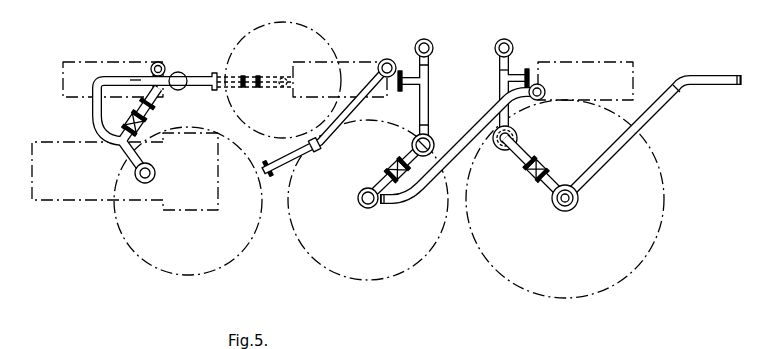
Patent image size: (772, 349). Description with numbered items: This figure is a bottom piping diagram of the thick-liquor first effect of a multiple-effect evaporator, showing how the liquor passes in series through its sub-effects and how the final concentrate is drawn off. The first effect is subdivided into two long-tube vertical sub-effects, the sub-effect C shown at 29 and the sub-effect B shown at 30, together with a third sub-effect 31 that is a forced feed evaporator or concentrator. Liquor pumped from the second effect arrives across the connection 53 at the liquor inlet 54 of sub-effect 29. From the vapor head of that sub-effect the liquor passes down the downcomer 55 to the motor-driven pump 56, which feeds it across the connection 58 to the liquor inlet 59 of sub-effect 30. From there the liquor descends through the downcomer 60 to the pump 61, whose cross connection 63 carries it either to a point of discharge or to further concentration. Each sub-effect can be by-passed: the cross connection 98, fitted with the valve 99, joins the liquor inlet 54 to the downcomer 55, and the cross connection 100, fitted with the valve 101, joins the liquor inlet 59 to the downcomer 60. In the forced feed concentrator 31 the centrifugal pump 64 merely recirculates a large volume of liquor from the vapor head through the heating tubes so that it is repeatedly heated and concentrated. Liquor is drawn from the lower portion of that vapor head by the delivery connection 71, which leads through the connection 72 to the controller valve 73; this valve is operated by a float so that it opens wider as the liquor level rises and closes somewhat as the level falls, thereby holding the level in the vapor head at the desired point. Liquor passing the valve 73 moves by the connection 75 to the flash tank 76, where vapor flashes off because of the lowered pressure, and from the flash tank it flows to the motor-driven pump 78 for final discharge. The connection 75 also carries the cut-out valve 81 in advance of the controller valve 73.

The sub-effect 1—C of the first effect 29 is at (502, 276).
The sub-effect 1—B of the first effect 30 is at (325, 267).
The forced feed evaporator (third sub-effect) 31 is at (137, 255).
The connection 53 is at (649, 121).
The liquor inlet 54 is at (579, 197).
The downcomer 55 is at (518, 134).
The pump 56 is at (572, 62).
The connection 58 is at (462, 148).
The liquor inlet 59 is at (358, 202).
The downcomer 60 is at (412, 143).
The pump 61 is at (363, 62).
The cross connection 63 is at (330, 132).
The centrifugal pump 64 is at (125, 171).
The delivery connection 71 is at (156, 172).
The connection 72 is at (128, 158).
The controller valve 73 is at (152, 121).
The connection 75 is at (196, 75).
The flash tank 76 is at (249, 36).
The pump 78 is at (121, 62).
The cut-out valve 81 is at (103, 124).
The cross connection 98 is at (521, 161).
The valve 99 is at (533, 182).
The cross connection 100 is at (381, 181).
The valve 101 is at (390, 165).